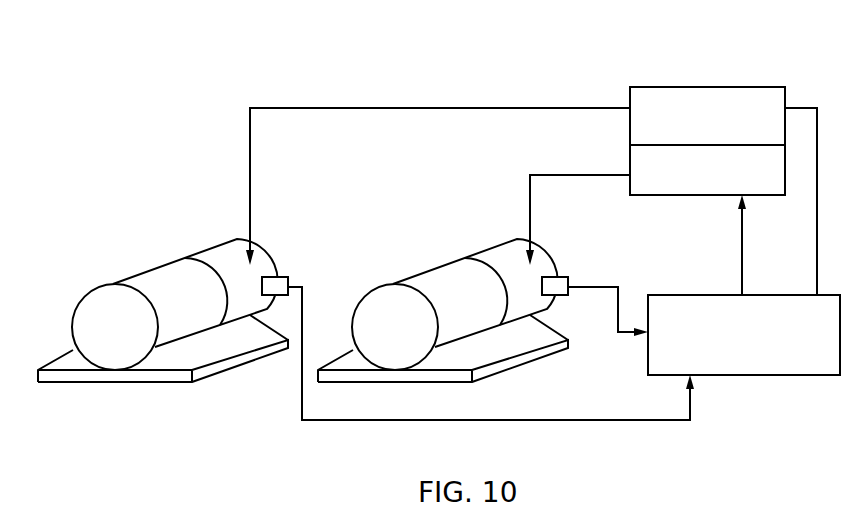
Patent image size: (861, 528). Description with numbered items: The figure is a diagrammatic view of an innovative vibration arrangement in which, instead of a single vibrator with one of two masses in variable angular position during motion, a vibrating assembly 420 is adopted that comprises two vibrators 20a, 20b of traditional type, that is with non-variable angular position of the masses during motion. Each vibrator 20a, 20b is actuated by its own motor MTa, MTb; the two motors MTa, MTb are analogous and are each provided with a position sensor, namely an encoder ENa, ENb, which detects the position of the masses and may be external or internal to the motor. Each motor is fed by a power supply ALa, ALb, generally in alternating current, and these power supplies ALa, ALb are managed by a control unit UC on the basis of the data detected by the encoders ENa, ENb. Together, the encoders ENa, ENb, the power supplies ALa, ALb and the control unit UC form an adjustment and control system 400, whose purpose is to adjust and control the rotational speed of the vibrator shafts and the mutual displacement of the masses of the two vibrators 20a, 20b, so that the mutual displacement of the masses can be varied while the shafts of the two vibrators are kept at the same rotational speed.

The adjustment and control system 400 is at (573, 98).
The vibrating assembly 420 is at (275, 390).
The vibrator 20a is at (103, 317).
The vibrator 20b is at (445, 287).
The encoder ENa is at (290, 280).
The encoder ENb is at (553, 282).
The motor MTa is at (260, 262).
The motor MTb is at (500, 260).
The power supply ALa is at (653, 102).
The power supply ALb is at (655, 187).
The control unit UC is at (730, 363).